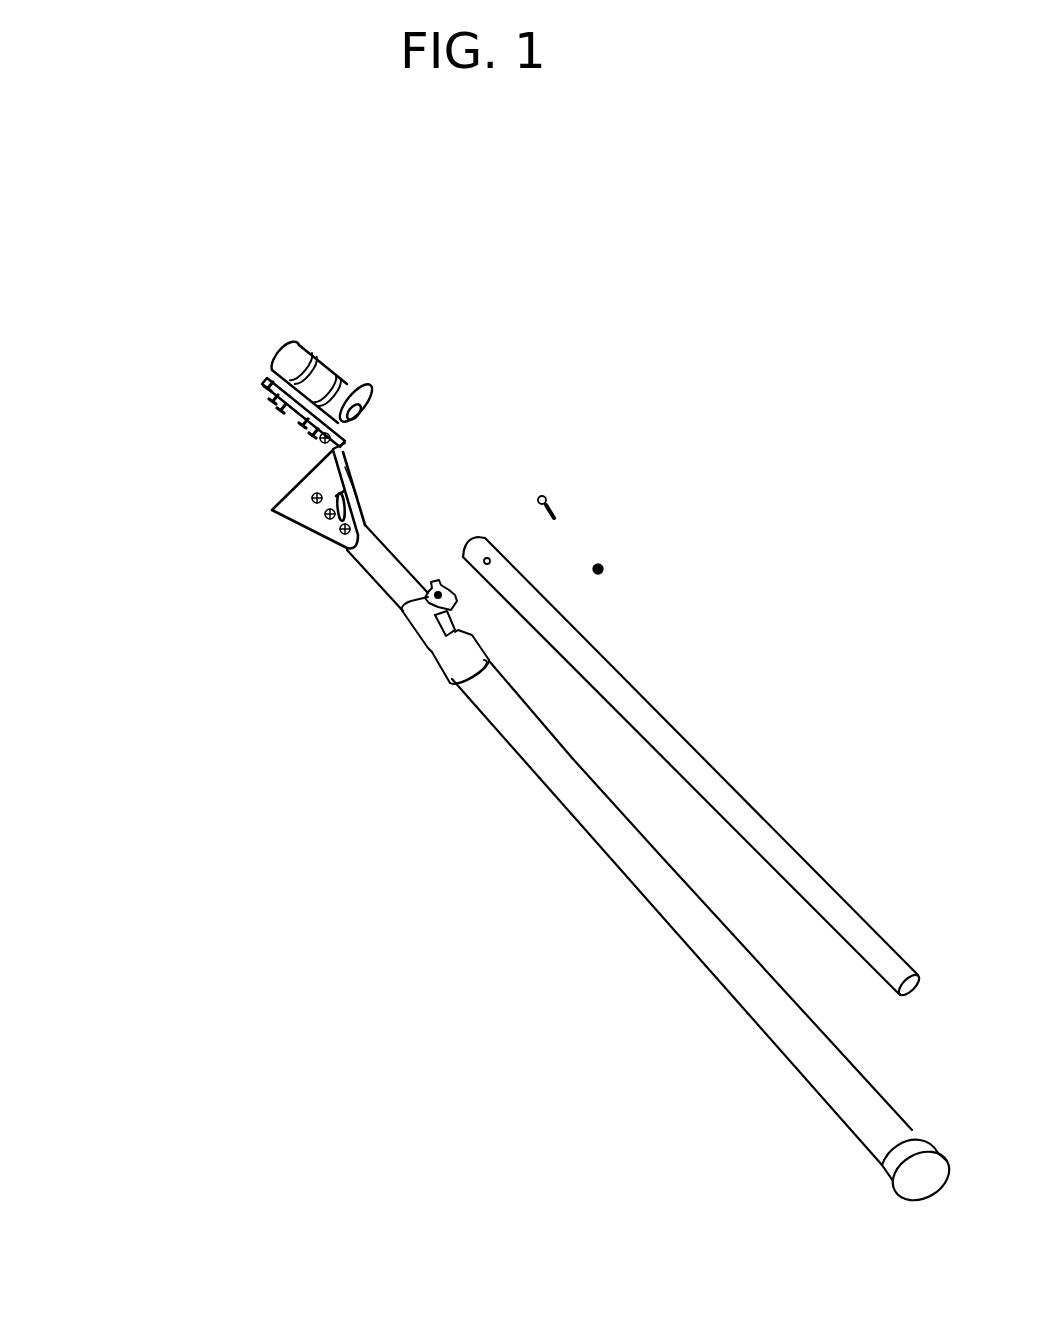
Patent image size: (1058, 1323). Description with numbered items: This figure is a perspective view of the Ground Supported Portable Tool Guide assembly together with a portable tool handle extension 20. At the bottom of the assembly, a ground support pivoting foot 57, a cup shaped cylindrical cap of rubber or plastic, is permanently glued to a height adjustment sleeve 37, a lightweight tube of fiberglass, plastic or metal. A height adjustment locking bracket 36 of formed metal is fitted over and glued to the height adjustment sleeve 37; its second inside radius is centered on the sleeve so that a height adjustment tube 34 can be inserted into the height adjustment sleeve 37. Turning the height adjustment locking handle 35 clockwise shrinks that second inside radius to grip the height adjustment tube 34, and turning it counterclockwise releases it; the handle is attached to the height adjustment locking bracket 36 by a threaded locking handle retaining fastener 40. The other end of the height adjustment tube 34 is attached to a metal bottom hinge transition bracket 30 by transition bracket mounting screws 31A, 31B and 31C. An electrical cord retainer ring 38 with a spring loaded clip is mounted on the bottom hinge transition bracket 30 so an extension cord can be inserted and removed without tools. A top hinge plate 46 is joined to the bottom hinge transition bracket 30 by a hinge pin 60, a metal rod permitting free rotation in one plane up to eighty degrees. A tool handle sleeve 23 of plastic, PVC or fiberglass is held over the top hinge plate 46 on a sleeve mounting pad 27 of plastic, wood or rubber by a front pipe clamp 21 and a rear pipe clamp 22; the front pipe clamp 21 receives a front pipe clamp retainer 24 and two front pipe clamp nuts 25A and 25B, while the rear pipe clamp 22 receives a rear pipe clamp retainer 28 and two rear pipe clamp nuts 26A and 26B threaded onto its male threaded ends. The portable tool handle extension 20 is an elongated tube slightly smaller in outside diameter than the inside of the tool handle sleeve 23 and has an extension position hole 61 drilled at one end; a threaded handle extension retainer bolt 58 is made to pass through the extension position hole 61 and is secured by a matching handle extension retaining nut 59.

The portable tool handle extension 20 is at (620, 668).
The front pipe clamp 21 is at (317, 351).
The rear pipe clamp 22 is at (356, 381).
The tool handle sleeve 23 is at (364, 395).
The front pipe clamp retainer 24 is at (269, 380).
The front pipe clamp nut 25A is at (270, 391).
The front pipe clamp nut 25B is at (279, 410).
The rear pipe clamp nut 26A is at (308, 428).
The rear pipe clamp nut 26B is at (316, 437).
The sleeve mounting pad 27 is at (275, 371).
The rear pipe clamp retainer 28 is at (290, 418).
The bottom hinge transition bracket 30 is at (271, 511).
The transition bracket mounting screw 31A is at (356, 482).
The transition bracket mounting screw 31B is at (327, 517).
The transition bracket mounting screw 31C is at (344, 534).
The height adjustment tube 34 is at (377, 588).
The height adjustment locking handle 35 is at (418, 633).
The height adjustment locking bracket 36 is at (447, 678).
The height adjustment sleeve 37 is at (602, 848).
The electrical cord retainer ring 38 is at (346, 504).
The locking handle retaining fastener 40 is at (425, 598).
The top hinge plate 46 is at (347, 450).
The ground support pivoting foot 57 is at (880, 1173).
The handle extension retainer bolt 58 is at (554, 501).
The handle extension retaining nut 59 is at (606, 570).
The hinge pin 60 is at (325, 436).
The extension position hole 61 is at (491, 561).